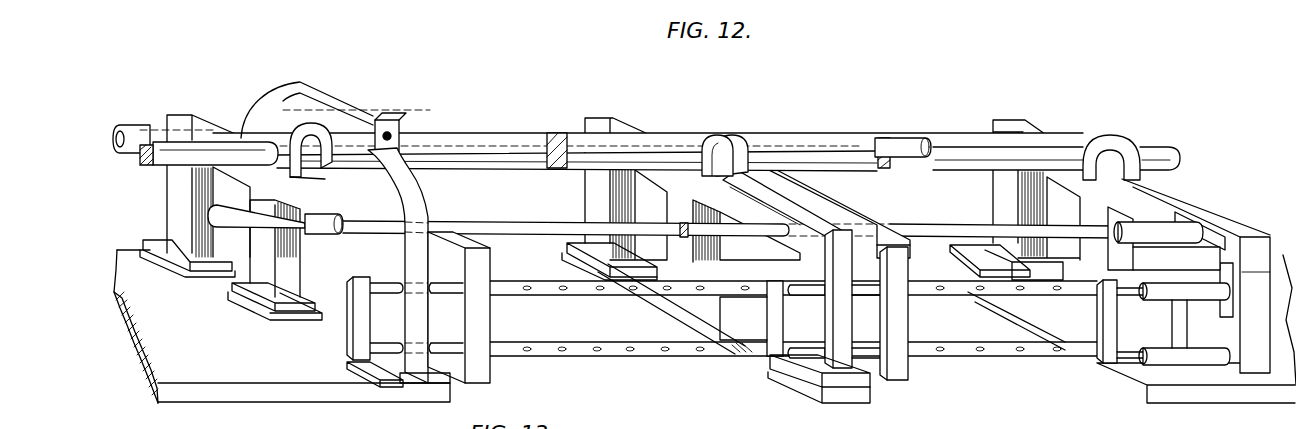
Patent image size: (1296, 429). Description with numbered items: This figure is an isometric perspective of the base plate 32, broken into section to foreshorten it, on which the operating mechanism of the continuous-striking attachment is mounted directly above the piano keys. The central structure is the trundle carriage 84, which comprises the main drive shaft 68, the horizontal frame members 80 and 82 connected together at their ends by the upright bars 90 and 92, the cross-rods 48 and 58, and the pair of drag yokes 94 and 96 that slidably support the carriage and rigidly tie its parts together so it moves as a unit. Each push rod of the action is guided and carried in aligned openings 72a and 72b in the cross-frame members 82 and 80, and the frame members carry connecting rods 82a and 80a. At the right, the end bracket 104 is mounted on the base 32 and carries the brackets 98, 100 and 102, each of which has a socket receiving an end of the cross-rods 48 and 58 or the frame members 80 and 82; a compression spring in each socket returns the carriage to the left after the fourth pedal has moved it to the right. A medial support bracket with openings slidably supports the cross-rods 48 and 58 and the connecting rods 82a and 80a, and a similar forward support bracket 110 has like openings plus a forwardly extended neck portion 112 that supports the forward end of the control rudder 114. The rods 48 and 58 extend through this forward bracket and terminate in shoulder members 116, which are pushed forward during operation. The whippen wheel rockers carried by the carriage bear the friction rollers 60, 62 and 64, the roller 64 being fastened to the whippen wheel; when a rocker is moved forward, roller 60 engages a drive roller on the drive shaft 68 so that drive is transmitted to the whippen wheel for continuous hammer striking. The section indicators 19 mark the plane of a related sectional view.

The base plate 32 is at (294, 394).
The cross-rod 48 is at (470, 134).
The drive shaft 68 is at (478, 167).
The second cross-rod 58 is at (926, 229).
The shoulder members 116 is at (134, 124).
The forward support bracket 110 is at (262, 107).
The control rudder 114 is at (285, 106).
The neck portion 112 is at (378, 119).
The bracket 98 is at (950, 128).
The right end bracket 104 is at (1173, 195).
The bracket 100 is at (1180, 237).
The upright bar 90 is at (347, 335).
The trundle carriage 84 is at (501, 372).
The drag yoke 94 is at (473, 383).
The frame member 82 is at (611, 297).
The frame member 80 is at (612, 357).
The openings 72a is at (562, 292).
The openings 72b is at (561, 345).
The connecting rod 82a is at (801, 294).
The connecting rod 80a is at (811, 353).
The drag yoke 96 is at (889, 370).
The upright bar 92 is at (1118, 341).
The bracket 102 is at (1180, 320).
The section line 19- 19 is at (955, 78).
The friction roller 64 is at (907, 428).
The friction roller 62 is at (930, 428).
The friction roller 60 is at (1004, 424).